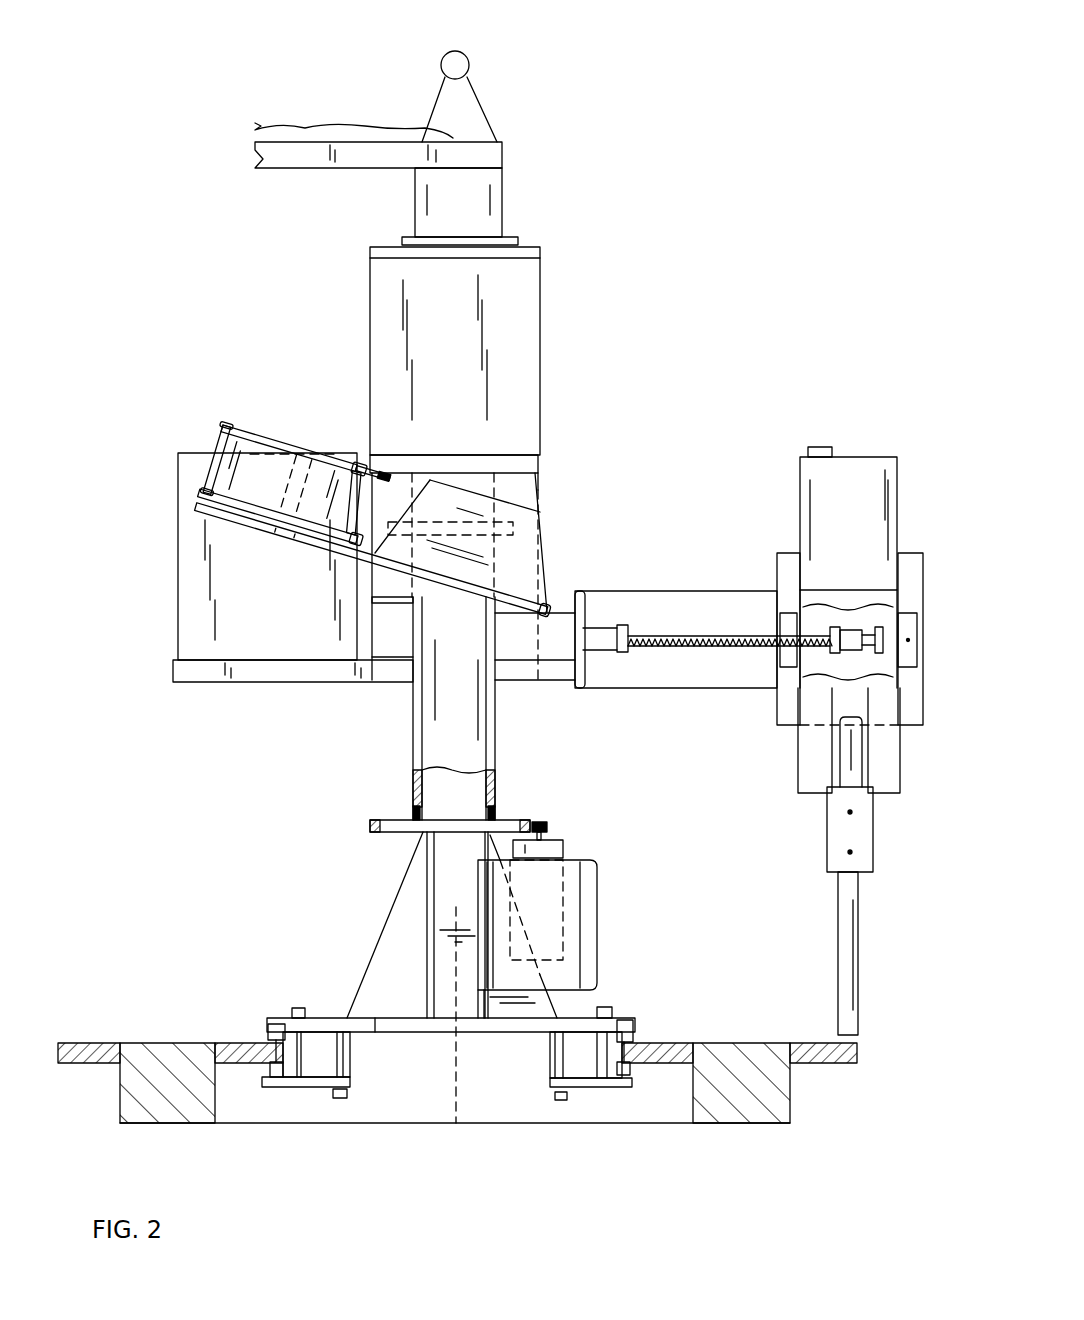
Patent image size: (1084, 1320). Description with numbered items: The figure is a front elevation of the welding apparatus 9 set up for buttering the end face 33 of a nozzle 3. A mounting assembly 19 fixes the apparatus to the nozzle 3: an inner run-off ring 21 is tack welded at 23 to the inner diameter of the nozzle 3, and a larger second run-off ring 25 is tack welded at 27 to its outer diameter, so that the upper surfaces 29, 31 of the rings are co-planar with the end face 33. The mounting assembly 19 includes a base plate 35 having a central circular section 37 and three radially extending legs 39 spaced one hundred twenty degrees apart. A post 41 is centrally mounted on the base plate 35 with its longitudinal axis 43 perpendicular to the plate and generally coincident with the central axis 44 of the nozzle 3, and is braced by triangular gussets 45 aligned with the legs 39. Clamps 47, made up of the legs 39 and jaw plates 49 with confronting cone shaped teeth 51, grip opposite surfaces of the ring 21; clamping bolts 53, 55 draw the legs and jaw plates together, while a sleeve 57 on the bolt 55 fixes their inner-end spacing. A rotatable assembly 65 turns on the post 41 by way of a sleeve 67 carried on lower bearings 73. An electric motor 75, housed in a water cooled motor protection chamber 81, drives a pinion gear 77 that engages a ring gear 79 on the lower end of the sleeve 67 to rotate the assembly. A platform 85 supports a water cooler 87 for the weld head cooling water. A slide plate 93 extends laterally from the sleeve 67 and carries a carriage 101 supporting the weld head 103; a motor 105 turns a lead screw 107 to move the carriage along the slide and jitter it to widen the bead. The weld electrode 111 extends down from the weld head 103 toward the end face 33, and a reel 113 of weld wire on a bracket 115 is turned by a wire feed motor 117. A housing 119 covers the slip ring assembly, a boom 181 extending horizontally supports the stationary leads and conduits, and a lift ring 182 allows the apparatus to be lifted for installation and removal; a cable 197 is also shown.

The nozzle 3 is at (725, 1062).
The welding apparatus 9 is at (703, 442).
The mounting assembly 19 is at (342, 928).
The inner run-off ring 21 is at (238, 1043).
The tack weld 23 is at (220, 1067).
The second run-off ring 25 is at (82, 1042).
The tack weld 27 is at (117, 1060).
The upper surface 29 is at (660, 1045).
The upper surface 31 is at (817, 1045).
The end face 33 is at (750, 1050).
The base plate 35 is at (380, 1043).
The central circular section 37 is at (465, 1033).
The legs 39 is at (317, 1018).
The post 41 is at (417, 883).
The longitudinal axis 43 is at (455, 937).
The central axis 44 is at (427, 1113).
The triangular gussets 45 is at (398, 918).
The clamps 47 is at (265, 1000).
The jaw plates 49 is at (597, 1060).
The cone shaped teeth 51 is at (633, 1067).
The clamping bolt 53 is at (598, 1088).
The clamping bolt 55 is at (560, 1057).
The sleeve 57 is at (548, 1067).
The rotatable assembly 65 is at (290, 711).
The sleeve 67 is at (437, 723).
The lower bearings 73 is at (495, 812).
The electric motor 75 is at (567, 850).
The pinion gear 77 is at (548, 822).
The ring gear 79 is at (393, 817).
The motor protection chamber 81 is at (587, 920).
The platform 85 is at (193, 667).
The water cooler 87 is at (205, 591).
The slide plate 93 is at (630, 603).
The carriage 101 is at (788, 562).
The weld head 103 is at (855, 465).
The motor 105 is at (555, 620).
The lead screw 107 is at (692, 637).
The weld electrode 111 is at (847, 927).
The reel 113 is at (266, 420).
The bracket 115 is at (325, 547).
The wire feed motor 117 is at (516, 508).
The housing 119 is at (397, 327).
The boom 181 is at (300, 162).
The lift ring 182 is at (470, 62).
The cable 197 is at (318, 133).